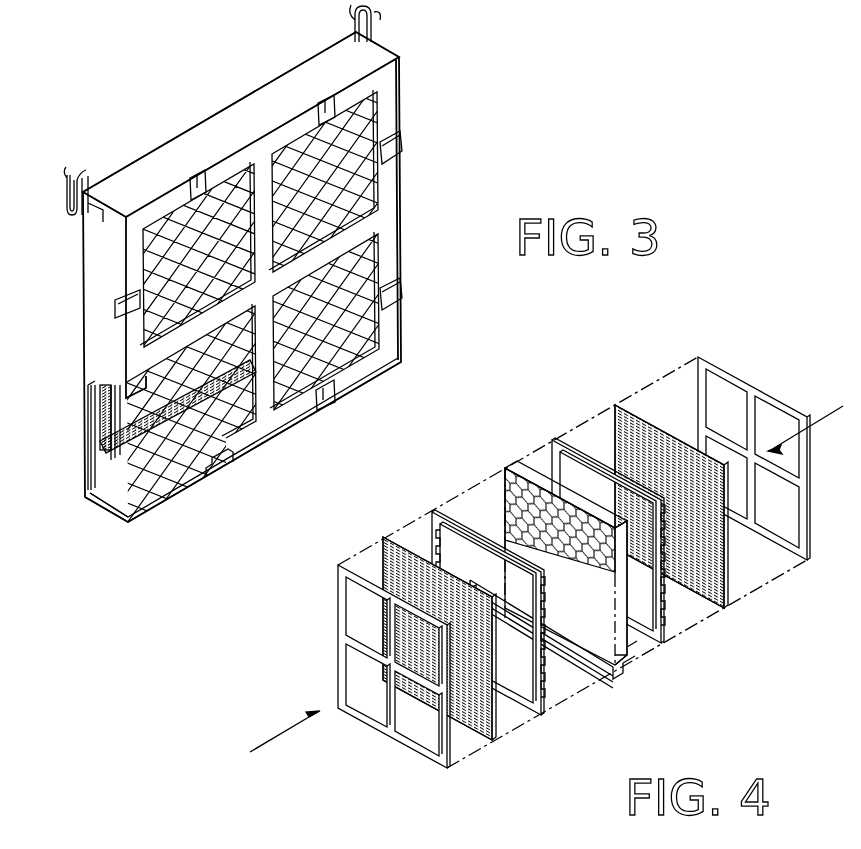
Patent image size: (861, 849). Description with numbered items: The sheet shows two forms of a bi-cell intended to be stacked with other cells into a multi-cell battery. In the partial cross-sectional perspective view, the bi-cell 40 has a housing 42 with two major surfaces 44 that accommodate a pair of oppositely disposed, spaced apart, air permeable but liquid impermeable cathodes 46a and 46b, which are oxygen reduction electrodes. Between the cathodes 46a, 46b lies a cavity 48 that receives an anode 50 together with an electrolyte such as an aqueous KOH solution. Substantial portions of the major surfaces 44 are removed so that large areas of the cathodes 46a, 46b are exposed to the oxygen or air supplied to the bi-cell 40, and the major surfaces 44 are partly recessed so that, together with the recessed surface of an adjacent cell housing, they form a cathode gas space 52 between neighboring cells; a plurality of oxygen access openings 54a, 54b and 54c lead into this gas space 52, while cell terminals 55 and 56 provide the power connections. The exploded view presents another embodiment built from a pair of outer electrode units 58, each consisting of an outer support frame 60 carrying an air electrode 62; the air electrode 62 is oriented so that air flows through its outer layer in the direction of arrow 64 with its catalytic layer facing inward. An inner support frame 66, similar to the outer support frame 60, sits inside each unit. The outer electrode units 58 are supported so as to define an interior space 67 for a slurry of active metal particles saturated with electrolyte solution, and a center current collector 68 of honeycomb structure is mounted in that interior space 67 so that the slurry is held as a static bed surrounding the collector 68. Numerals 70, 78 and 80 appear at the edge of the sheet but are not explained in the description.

In FIG. 3, the bi-cell 40 is at (335, 434).
In FIG. 3, the housing 42 is at (243, 100).
In FIG. 3, the major surfaces 44 is at (372, 230).
In FIG. 3, the cathode 46a is at (108, 465).
In FIG. 3, the cathode 46b is at (165, 392).
In FIG. 3, the cavity 48 is at (138, 490).
In FIG. 3, the anode 50 is at (110, 424).
In FIG. 3, the cathode gas space 52 is at (380, 200).
In FIG. 3, the oxygen access opening 54a is at (402, 290).
In FIG. 3, the oxygen access opening 54b is at (402, 142).
In FIG. 3, the oxygen access opening 54c is at (112, 310).
In FIG. 3, the cell terminal 55 is at (70, 172).
In FIG. 3, the cell terminal 56 is at (352, 24).
In FIG. 4, the outer electrode unit 58 is at (458, 520).
In FIG. 4, the outer support frame 60 is at (742, 374).
In FIG. 4, the air electrode 62 is at (650, 412).
In FIG. 4, the arrow 64 is at (285, 733).
In FIG. 4, the inner support frame 66 is at (578, 445).
In FIG. 4, the interior space 67 is at (688, 661).
In FIG. 4, the current collector 68 is at (520, 467).
In FIG. 4, the element 70 is at (254, 838).
In FIG. 4, the element 78 is at (146, 838).
In FIG. 4, the element 80 is at (215, 848).